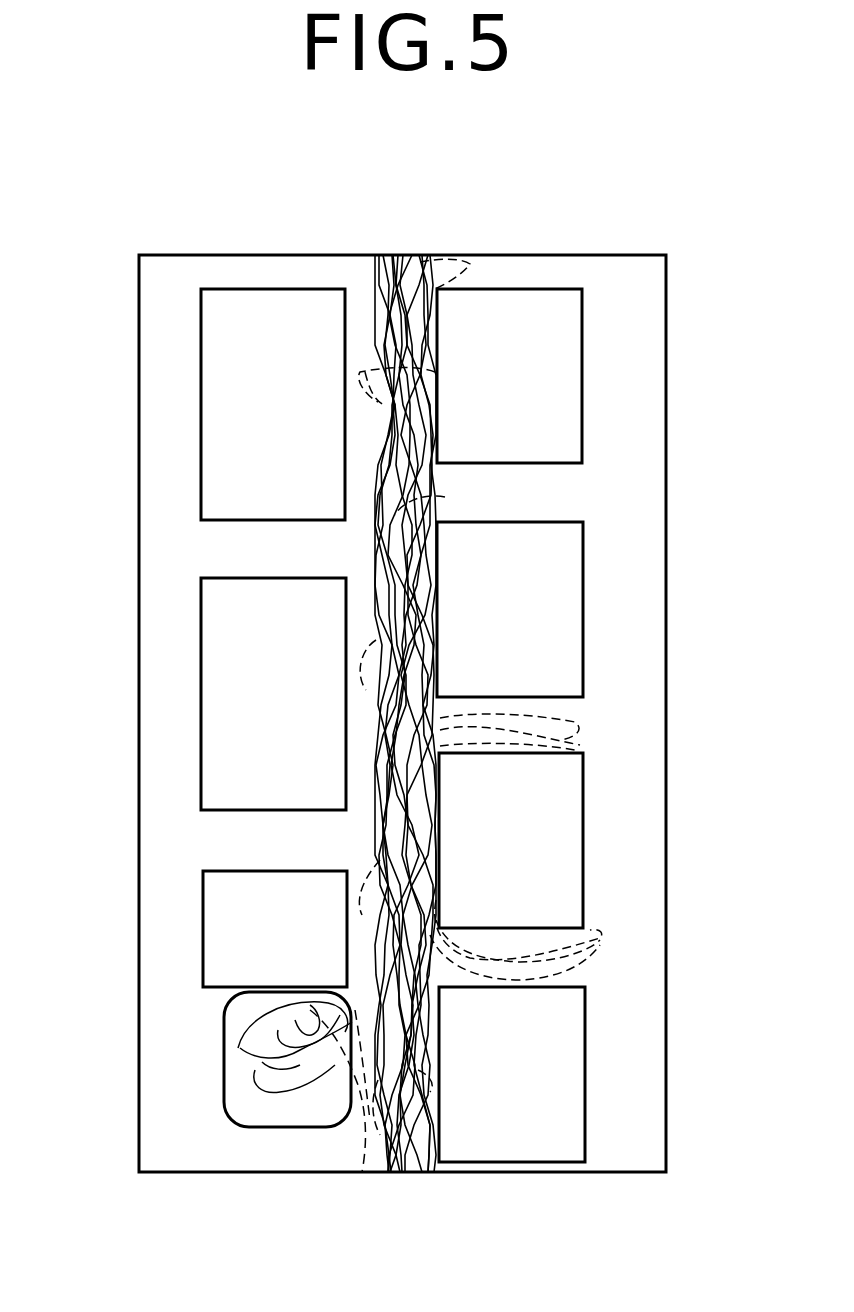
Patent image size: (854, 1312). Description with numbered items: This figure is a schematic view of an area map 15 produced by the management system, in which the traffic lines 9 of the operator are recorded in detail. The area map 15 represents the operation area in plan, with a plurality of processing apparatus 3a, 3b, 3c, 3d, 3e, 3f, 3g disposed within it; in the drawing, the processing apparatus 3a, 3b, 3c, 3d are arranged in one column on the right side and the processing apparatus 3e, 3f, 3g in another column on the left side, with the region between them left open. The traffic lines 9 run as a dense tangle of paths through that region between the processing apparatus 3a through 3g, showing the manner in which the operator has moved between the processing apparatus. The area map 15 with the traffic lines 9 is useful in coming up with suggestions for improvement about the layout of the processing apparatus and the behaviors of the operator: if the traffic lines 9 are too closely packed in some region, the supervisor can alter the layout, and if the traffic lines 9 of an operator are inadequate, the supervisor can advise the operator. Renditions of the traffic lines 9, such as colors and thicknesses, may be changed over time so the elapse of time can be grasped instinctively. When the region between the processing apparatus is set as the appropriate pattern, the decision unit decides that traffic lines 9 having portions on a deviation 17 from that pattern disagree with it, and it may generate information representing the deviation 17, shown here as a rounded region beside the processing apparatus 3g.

The processing apparatus 3a is at (582, 372).
The processing apparatus 3b is at (583, 617).
The processing apparatus 3c is at (583, 845).
The processing apparatus 3d is at (585, 1070).
The processing apparatus 3e is at (201, 403).
The processing apparatus 3f is at (201, 698).
The processing apparatus 3g is at (203, 938).
The traffic lines 9 is at (457, 507).
The area map 15 is at (482, 254).
The deviation 17 is at (224, 1068).